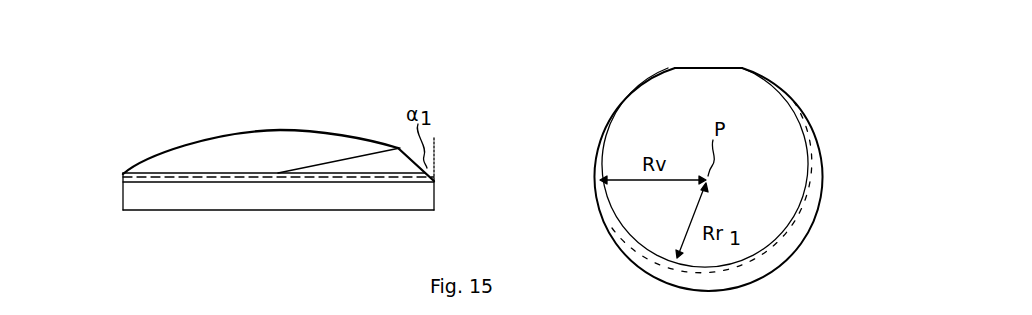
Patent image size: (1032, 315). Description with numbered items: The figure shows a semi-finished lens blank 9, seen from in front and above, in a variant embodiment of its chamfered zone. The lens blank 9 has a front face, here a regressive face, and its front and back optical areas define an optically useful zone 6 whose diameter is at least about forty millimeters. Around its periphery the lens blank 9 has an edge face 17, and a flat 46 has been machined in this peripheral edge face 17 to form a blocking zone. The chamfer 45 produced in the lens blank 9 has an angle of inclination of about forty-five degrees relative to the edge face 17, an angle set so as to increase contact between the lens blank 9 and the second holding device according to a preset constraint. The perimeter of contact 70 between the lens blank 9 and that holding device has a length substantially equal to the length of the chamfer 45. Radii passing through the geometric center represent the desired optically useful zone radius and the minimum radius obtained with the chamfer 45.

The optically useful zone 6 is at (275, 130).
The semi-finished lens blank 9 is at (357, 102).
The chamfer 45 is at (393, 163).
The peripheral edge face 17 is at (434, 195).
The perimeter of contact 70 is at (358, 178).
The flat 46 is at (123, 195).